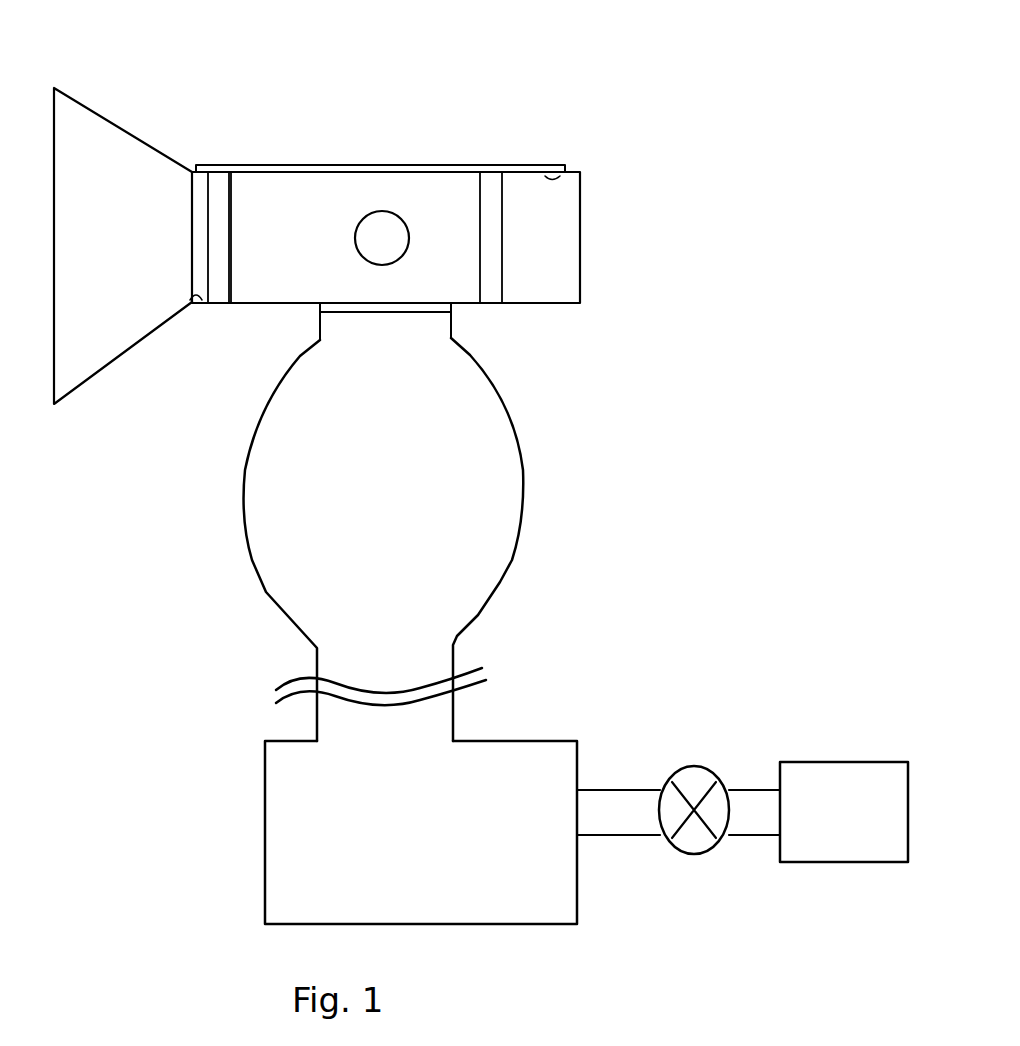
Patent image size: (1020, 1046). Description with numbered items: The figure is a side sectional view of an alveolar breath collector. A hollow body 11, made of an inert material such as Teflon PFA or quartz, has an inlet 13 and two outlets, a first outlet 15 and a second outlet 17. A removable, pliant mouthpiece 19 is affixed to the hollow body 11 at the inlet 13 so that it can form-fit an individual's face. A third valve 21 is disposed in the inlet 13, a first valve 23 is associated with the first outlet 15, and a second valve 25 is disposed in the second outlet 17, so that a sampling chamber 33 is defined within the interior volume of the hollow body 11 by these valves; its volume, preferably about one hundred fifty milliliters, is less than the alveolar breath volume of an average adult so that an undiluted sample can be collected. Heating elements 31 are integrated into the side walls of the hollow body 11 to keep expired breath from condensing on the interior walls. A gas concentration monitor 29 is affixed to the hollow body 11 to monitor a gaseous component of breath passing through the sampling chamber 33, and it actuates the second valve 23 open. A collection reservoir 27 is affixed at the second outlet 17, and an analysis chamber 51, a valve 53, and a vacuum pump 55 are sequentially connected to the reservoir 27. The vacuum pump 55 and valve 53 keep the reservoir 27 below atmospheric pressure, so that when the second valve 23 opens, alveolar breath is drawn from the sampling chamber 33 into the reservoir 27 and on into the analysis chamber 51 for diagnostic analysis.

The hollow body 11 is at (290, 167).
The inlet 13 is at (190, 304).
The first outlet 15 is at (560, 178).
The second outlet 17 is at (324, 320).
The mouthpiece 19 is at (104, 112).
The third valve 21 is at (490, 182).
The second valve 23 is at (456, 304).
The second valve 25 is at (216, 184).
The collection reservoir 27 is at (526, 456).
The gas concentration monitor 29 is at (383, 212).
The heating elements 31 is at (322, 166).
The sampling chamber 33 is at (334, 235).
The analysis chamber 51 is at (516, 742).
The valve 53 is at (702, 768).
The vacuum pump 55 is at (840, 763).